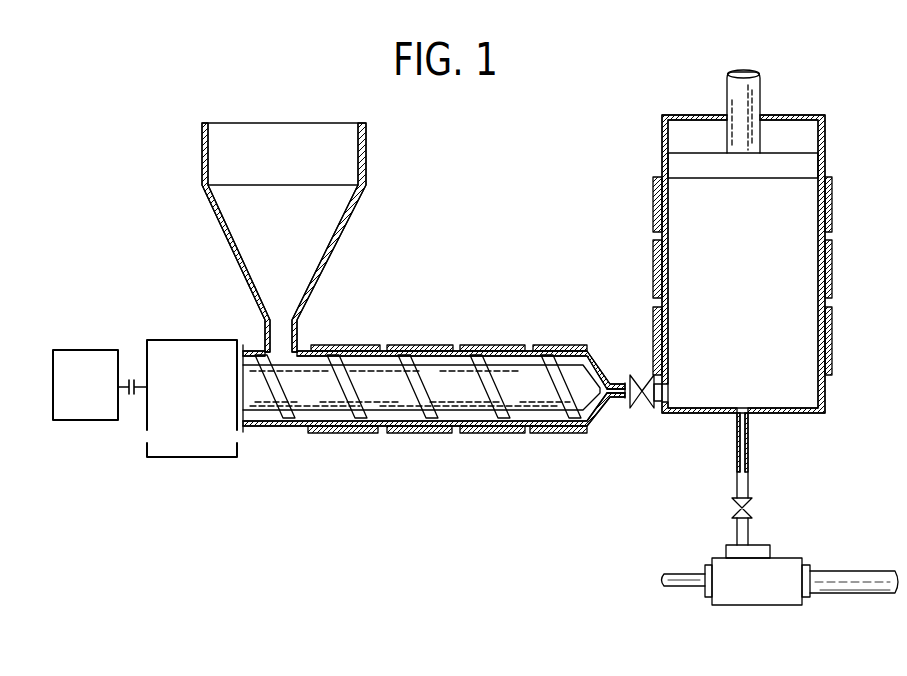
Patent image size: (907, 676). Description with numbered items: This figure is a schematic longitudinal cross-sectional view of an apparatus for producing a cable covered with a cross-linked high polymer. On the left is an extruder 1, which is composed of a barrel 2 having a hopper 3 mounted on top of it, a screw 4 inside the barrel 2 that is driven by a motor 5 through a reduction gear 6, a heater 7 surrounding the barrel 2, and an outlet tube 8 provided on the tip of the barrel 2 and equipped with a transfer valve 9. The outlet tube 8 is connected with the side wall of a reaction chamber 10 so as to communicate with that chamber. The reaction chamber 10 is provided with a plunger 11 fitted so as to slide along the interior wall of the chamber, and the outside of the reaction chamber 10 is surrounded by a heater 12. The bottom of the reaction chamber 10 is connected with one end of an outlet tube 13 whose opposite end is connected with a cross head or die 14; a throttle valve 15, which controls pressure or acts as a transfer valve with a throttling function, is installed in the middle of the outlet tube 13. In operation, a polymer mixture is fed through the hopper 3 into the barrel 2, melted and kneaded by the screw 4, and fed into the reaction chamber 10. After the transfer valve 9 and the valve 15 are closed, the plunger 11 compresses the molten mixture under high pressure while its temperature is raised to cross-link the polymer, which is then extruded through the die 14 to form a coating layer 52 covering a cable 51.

The extruder 1 is at (415, 303).
The barrel 2 is at (457, 347).
The hopper 3 is at (357, 154).
The screw 4 is at (364, 351).
The motor 5 is at (81, 410).
The reduction gear 6 is at (186, 446).
The heater 7 is at (423, 436).
The outlet tube 8 is at (611, 402).
The transfer valve 9 is at (641, 410).
The reaction chamber 10 is at (803, 415).
The plunger 11 is at (783, 167).
The heater 12 is at (830, 263).
The outlet tube 13 is at (735, 448).
The cross head or die 14 is at (750, 597).
The throttle valve 15 is at (732, 510).
The cable 51 is at (672, 576).
The coating layer 52 is at (856, 585).